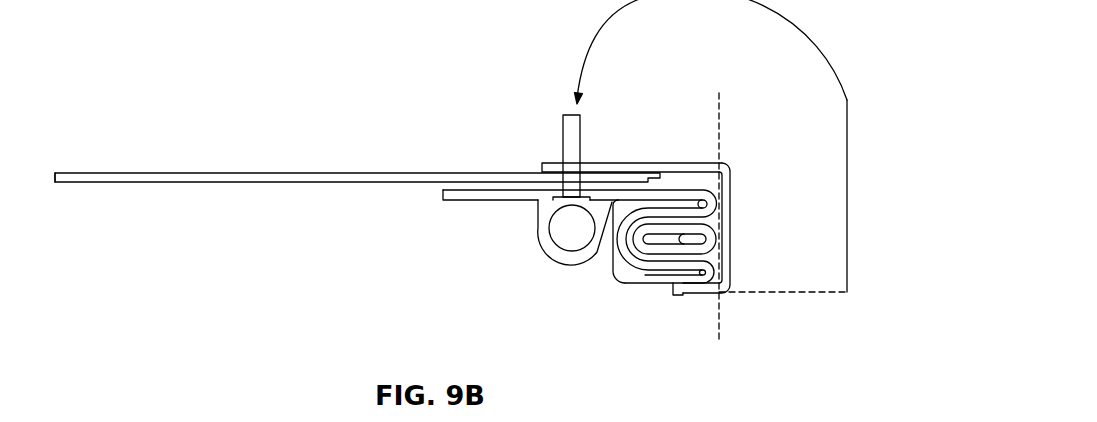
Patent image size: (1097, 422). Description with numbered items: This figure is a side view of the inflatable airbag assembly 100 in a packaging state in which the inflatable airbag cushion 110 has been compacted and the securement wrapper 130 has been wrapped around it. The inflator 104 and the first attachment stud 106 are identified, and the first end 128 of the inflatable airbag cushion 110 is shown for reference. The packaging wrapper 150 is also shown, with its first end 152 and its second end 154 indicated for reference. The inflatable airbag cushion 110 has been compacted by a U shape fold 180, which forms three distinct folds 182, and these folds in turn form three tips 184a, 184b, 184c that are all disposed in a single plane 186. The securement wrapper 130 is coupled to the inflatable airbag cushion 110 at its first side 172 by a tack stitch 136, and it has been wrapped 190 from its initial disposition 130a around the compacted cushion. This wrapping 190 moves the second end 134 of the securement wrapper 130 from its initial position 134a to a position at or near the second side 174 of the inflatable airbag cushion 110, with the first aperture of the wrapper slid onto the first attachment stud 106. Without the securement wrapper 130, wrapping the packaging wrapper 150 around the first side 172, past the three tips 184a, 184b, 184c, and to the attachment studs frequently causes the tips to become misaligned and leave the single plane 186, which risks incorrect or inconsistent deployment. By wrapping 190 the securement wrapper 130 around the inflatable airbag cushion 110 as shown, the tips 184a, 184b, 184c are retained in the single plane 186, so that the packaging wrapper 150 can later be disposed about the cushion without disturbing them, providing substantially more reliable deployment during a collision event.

The inflatable airbag assembly 100 is at (206, 104).
The inflator 104 is at (555, 233).
The first attachment stud 106 is at (563, 113).
The inflatable airbag cushion 110 is at (636, 285).
The first end 128 is at (444, 195).
The securement wrapper 130 is at (590, 163).
The initial disposition 130a is at (780, 295).
The second end 134 is at (542, 165).
The initial position 134a is at (851, 297).
The tack stitch 136 is at (685, 284).
The packaging wrapper 150 is at (182, 183).
The first end 152 is at (670, 167).
The second end 154 is at (55, 176).
The first side 172 is at (716, 327).
The second side 174 is at (690, 137).
The U shape fold 180 is at (598, 290).
The distinct folds 182 is at (810, 241).
The tip 184a is at (730, 268).
The tip 184b is at (730, 236).
The tip 184c is at (730, 204).
The single plane 186 is at (721, 114).
The wrapping 190 is at (792, 19).